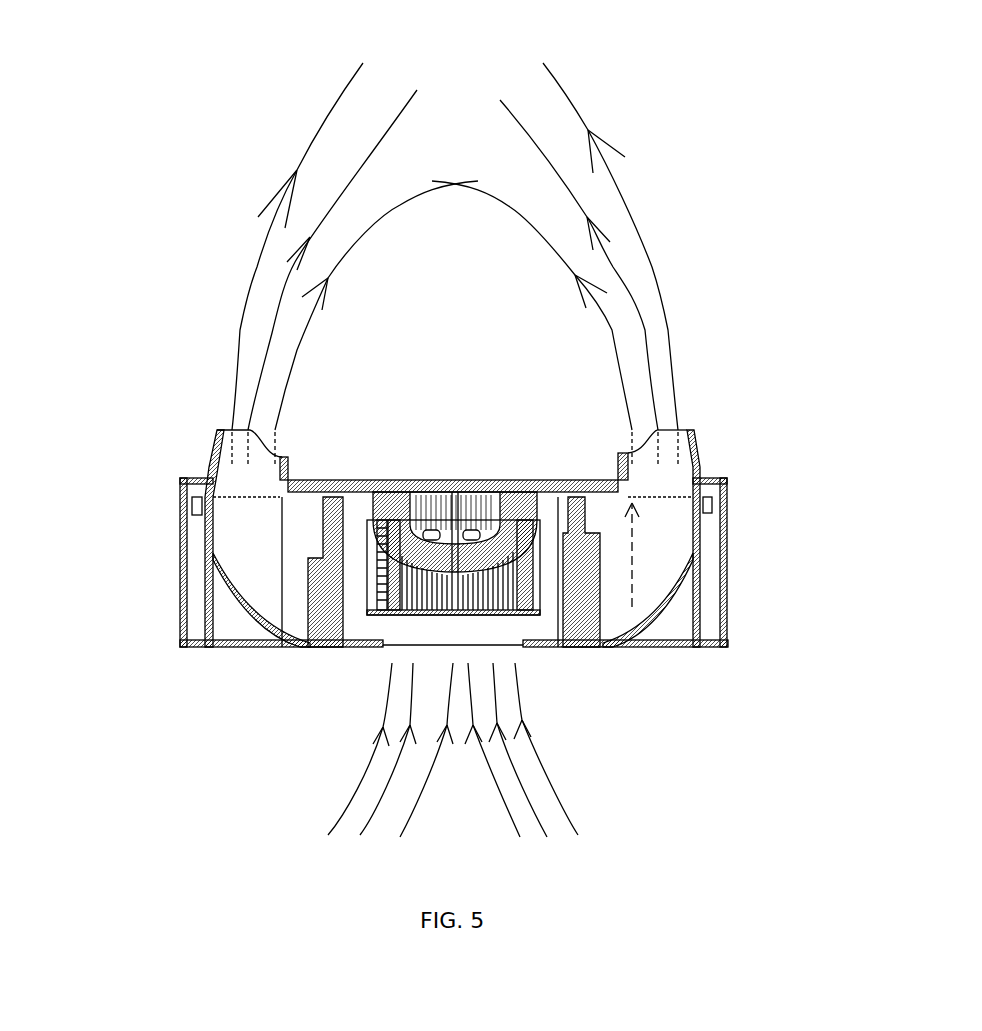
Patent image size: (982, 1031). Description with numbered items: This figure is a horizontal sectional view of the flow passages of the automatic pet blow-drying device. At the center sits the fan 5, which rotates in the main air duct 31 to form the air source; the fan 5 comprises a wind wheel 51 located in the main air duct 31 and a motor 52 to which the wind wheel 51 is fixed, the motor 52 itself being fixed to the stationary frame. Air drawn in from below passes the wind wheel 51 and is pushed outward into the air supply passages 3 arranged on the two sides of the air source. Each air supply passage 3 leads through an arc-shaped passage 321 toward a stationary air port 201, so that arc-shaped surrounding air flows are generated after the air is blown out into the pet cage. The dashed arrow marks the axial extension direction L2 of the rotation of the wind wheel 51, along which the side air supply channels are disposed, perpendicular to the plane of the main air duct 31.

The stationary air port 201 is at (218, 455).
The air supply passage 3 is at (238, 545).
The arc-shaped passage 321 is at (255, 595).
The main air duct 31 is at (355, 548).
The fan 5 is at (545, 649).
The wind wheel 51 is at (490, 585).
The motor 52 is at (513, 538).
The axial extension direction L2 is at (632, 547).